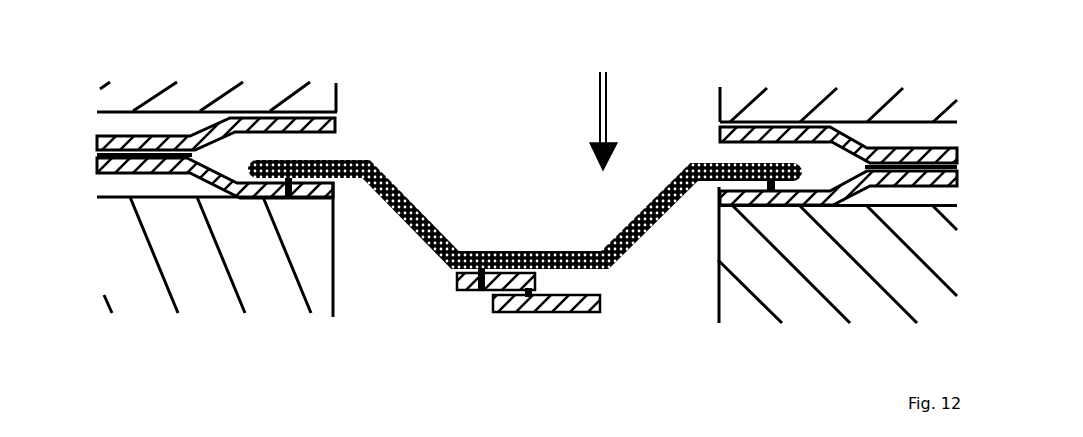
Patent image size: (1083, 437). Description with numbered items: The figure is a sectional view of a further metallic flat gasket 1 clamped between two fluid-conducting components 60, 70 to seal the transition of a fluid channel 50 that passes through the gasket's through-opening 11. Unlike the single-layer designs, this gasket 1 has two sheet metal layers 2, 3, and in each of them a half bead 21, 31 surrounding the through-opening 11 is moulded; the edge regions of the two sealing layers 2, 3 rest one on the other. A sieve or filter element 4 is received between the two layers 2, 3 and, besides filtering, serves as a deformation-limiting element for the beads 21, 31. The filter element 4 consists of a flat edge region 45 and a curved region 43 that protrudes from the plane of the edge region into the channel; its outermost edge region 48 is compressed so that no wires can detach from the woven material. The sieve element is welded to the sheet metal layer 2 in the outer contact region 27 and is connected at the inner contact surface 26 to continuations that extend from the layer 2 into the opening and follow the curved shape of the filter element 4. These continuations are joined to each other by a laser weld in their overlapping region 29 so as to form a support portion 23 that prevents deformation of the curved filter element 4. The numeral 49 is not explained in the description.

The metallic flat gasket 1 is at (226, 197).
The sheet metal layer 2 is at (718, 203).
The sheet metal layer 3 is at (236, 78).
The filter element 4 is at (525, 210).
The through-opening 11 is at (538, 175).
The half bead 21 is at (215, 251).
The support portion 23 is at (590, 308).
The inner contact surface 26 is at (535, 275).
The outer contact region 27 is at (735, 209).
The overlapping region 29 is at (540, 346).
The half bead 31 is at (200, 125).
The curved region 43 is at (525, 188).
The edge region 45 is at (353, 160).
The edge region of the sieve element 48 is at (201, 182).
The contact post 49 is at (300, 194).
The fluid channel 50 is at (553, 104).
The component 60 is at (807, 86).
The component 70 is at (527, 252).